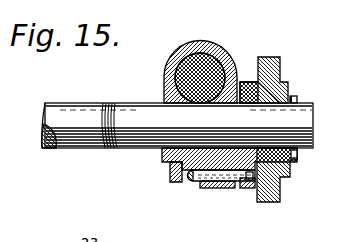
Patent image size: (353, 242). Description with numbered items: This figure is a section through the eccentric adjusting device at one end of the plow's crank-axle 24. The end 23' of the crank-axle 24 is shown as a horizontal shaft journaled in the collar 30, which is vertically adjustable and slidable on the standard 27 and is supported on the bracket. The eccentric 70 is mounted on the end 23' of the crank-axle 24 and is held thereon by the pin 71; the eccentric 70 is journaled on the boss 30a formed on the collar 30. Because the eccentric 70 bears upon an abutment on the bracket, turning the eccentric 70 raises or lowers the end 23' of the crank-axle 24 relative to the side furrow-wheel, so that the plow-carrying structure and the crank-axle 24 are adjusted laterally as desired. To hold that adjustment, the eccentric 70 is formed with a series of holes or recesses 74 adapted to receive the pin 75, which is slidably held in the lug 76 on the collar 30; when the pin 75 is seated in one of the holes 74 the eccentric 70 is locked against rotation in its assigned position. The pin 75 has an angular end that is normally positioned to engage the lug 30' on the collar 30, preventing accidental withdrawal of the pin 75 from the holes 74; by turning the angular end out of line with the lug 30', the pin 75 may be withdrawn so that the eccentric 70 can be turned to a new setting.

The end of crank-axle 23' is at (179, 125).
The crank-axle 24 is at (74, 112).
The standard 27 is at (210, 60).
The collar 30 is at (181, 72).
The boss 30a is at (281, 79).
The lug 30' is at (208, 173).
The eccentric 70 is at (263, 202).
The pin 71 is at (297, 98).
The holes or recesses 74 is at (249, 190).
The pin 75 is at (222, 178).
The lug 76 is at (193, 186).